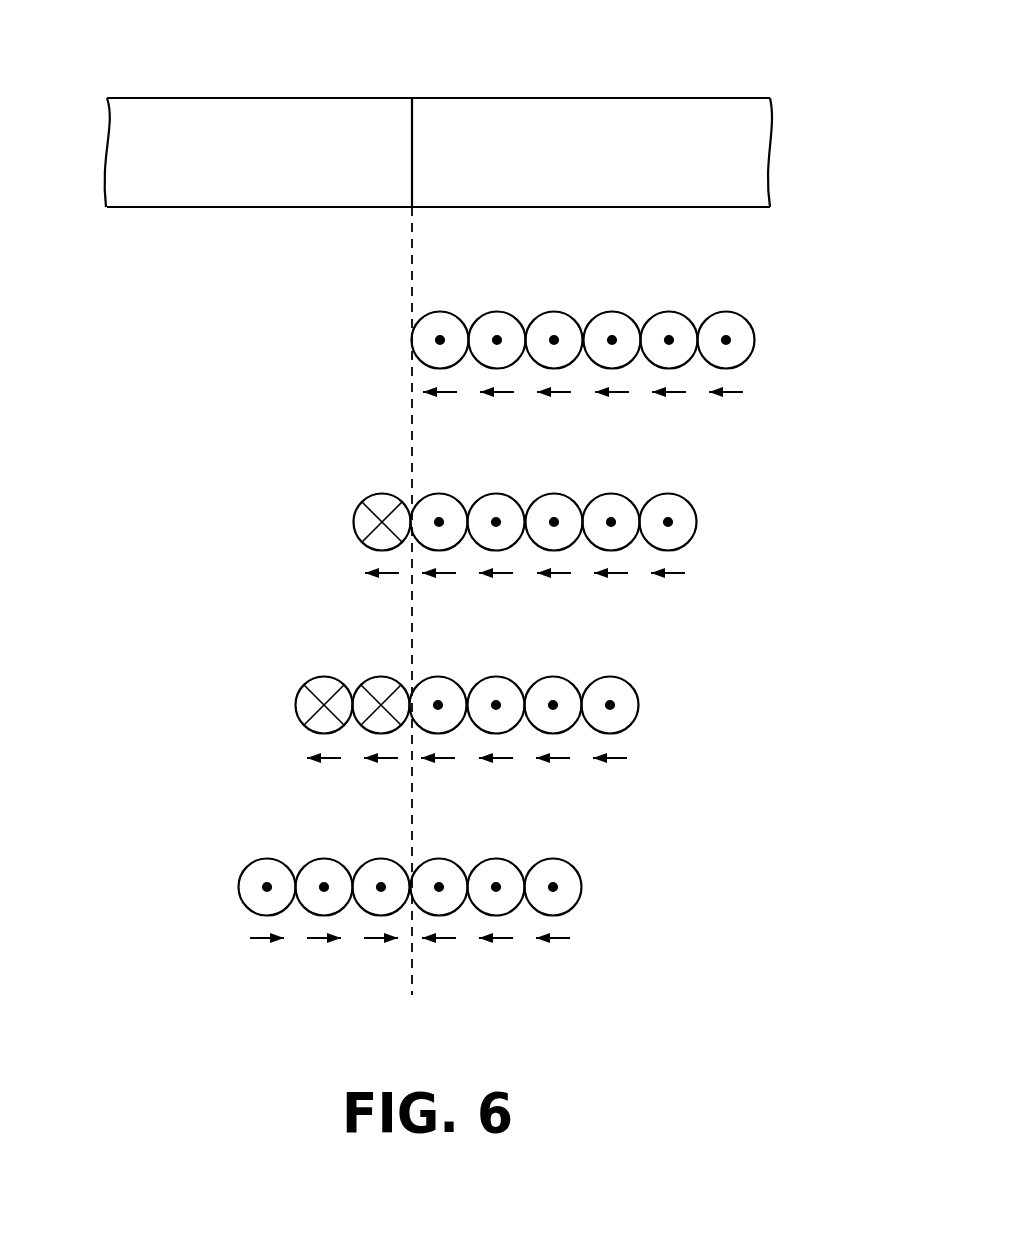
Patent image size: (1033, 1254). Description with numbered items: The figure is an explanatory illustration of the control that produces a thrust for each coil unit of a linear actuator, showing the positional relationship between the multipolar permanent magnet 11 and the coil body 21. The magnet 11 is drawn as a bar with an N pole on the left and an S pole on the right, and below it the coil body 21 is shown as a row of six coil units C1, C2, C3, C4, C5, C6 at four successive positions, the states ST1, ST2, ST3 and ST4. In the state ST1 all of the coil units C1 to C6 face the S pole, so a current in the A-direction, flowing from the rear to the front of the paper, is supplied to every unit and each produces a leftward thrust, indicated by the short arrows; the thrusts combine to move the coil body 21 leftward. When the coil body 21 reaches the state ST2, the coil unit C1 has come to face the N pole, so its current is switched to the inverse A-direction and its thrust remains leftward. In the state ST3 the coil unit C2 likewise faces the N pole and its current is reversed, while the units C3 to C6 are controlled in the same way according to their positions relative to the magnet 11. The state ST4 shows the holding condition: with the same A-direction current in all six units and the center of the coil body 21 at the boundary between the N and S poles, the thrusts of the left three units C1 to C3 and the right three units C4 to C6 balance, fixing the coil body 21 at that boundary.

The multipolar permanent magnet 11 is at (537, 96).
The coil body 21 is at (441, 605).
The coil unit C1 is at (437, 311).
The coil unit C2 is at (494, 311).
The coil unit C3 is at (551, 311).
The coil unit C4 is at (609, 311).
The coil unit C5 is at (666, 311).
The coil unit C6 is at (723, 311).
The state ST1 is at (522, 332).
The state ST2 is at (211, 514).
The state ST3 is at (154, 697).
The state ST4 is at (94, 879).